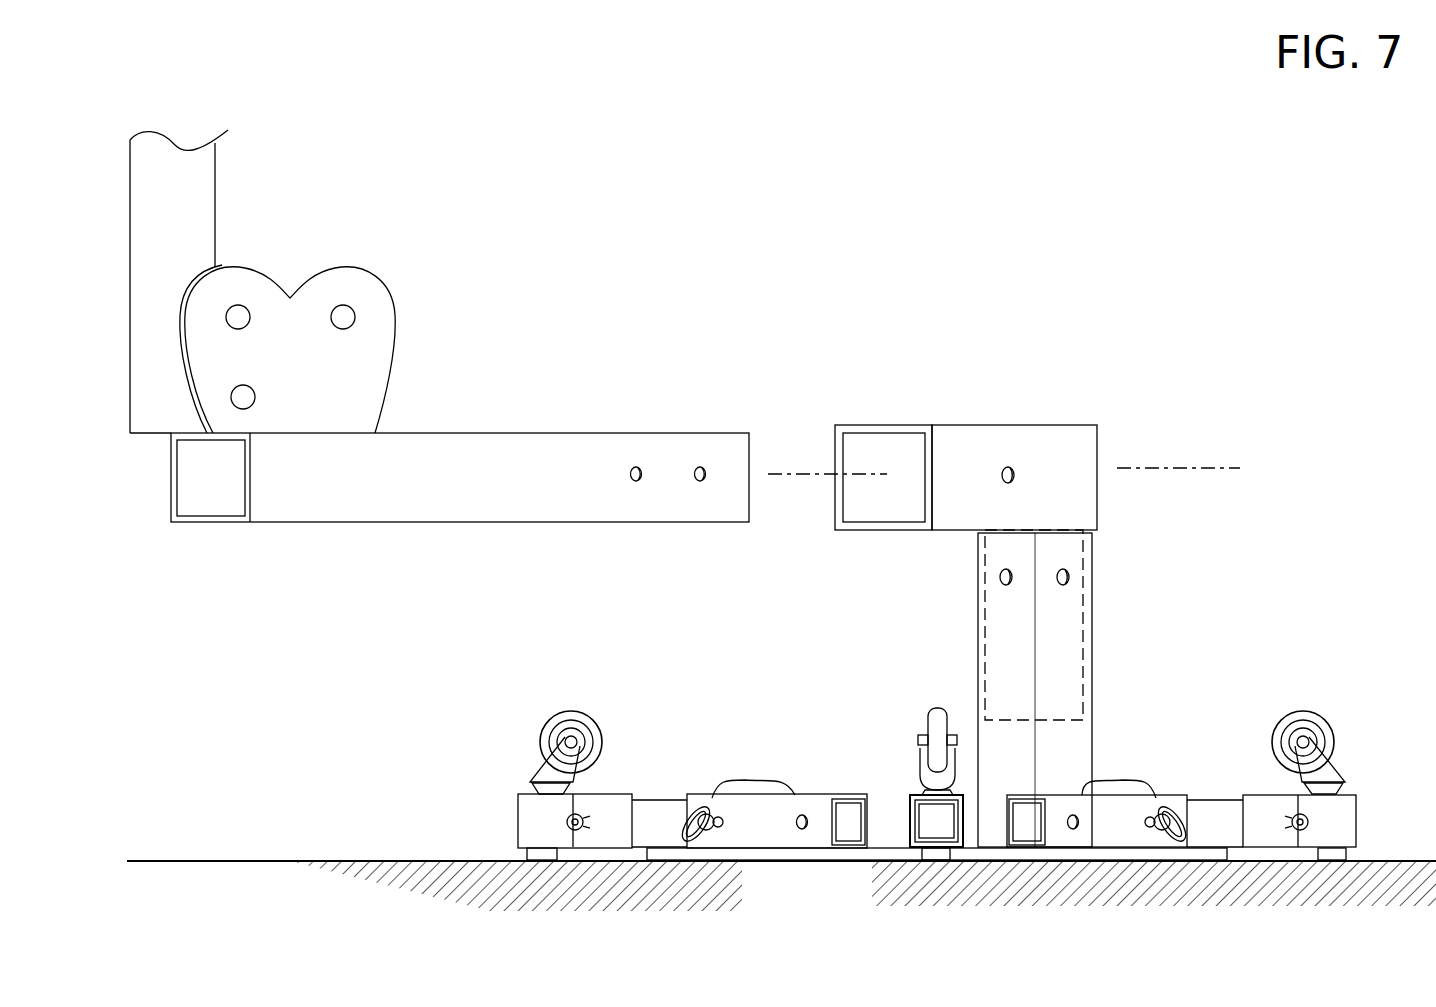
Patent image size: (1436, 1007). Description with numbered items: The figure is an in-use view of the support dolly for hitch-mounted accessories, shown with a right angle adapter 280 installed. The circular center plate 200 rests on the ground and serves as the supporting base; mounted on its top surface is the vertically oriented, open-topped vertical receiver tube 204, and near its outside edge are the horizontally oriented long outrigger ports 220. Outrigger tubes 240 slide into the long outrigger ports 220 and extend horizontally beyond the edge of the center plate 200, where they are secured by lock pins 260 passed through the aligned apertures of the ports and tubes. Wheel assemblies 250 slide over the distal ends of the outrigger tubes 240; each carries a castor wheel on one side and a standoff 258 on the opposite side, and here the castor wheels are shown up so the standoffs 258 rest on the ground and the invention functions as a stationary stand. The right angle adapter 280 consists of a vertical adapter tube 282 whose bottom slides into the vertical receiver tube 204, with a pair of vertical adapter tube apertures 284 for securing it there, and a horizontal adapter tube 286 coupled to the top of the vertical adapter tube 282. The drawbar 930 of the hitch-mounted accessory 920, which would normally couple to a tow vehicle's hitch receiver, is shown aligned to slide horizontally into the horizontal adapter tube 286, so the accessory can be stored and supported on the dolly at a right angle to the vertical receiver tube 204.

The center plate 200 is at (1212, 860).
The vertical receiver tube 204 is at (1092, 735).
The long outrigger ports 220 is at (773, 838).
The outrigger tubes 240 is at (654, 812).
The wheel assemblies 250 is at (540, 808).
The standoff 258 is at (548, 860).
The lock pins 260 is at (703, 800).
The right angle adapter 280 is at (1097, 425).
The vertical adapter tube 282 is at (1086, 620).
The vertical adapter tube apertures 284 is at (1065, 577).
The horizontal adapter tube 286 is at (957, 425).
The hitch-mounted accessory 920 is at (215, 212).
The drawbar 930 is at (519, 442).